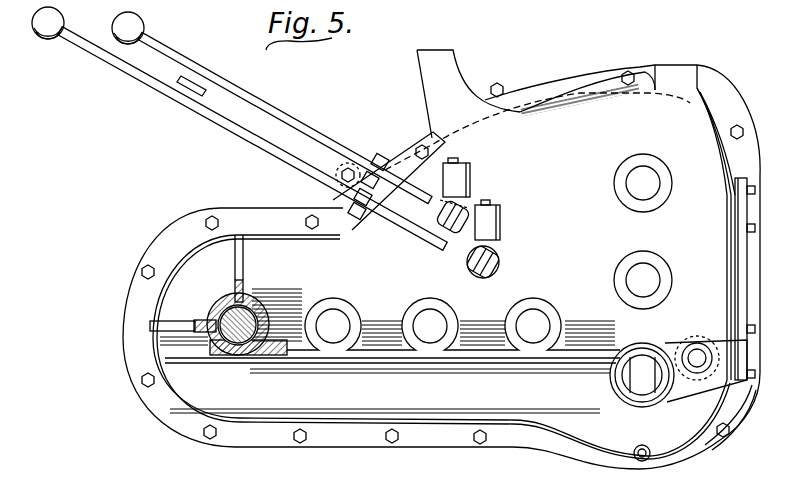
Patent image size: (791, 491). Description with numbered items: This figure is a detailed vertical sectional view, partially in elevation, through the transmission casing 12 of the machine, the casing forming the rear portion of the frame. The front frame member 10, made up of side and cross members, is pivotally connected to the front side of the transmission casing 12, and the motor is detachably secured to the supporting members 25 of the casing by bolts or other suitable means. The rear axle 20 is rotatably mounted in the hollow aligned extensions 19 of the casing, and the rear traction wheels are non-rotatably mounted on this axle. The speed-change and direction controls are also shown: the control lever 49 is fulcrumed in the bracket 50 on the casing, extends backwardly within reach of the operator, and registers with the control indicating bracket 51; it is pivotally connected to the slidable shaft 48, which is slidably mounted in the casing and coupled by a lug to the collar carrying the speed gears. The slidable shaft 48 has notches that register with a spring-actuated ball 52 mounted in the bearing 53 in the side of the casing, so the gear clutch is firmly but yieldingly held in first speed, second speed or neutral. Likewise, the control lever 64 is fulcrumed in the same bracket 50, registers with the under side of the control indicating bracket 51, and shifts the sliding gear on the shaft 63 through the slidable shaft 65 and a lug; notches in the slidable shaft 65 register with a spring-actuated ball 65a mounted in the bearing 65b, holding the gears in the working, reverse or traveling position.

The front frame member 10 is at (718, 340).
The transmission casing 12 is at (181, 212).
The hollow aligned extensions 19 is at (216, 348).
The rear axle 20 is at (210, 336).
The supporting members 25 is at (458, 83).
The slidable shaft 48 is at (467, 191).
The control lever 49 is at (302, 130).
The bracket 50 is at (375, 158).
The control indicating bracket 51 is at (210, 72).
The spring-actuated ball 52 is at (472, 192).
The bearing 53 is at (470, 167).
The shaft 63 is at (535, 327).
The control lever 64 is at (290, 158).
The slidable shaft 65 is at (500, 266).
The spring-actuated ball 65a is at (500, 248).
The bearing 65b is at (503, 210).